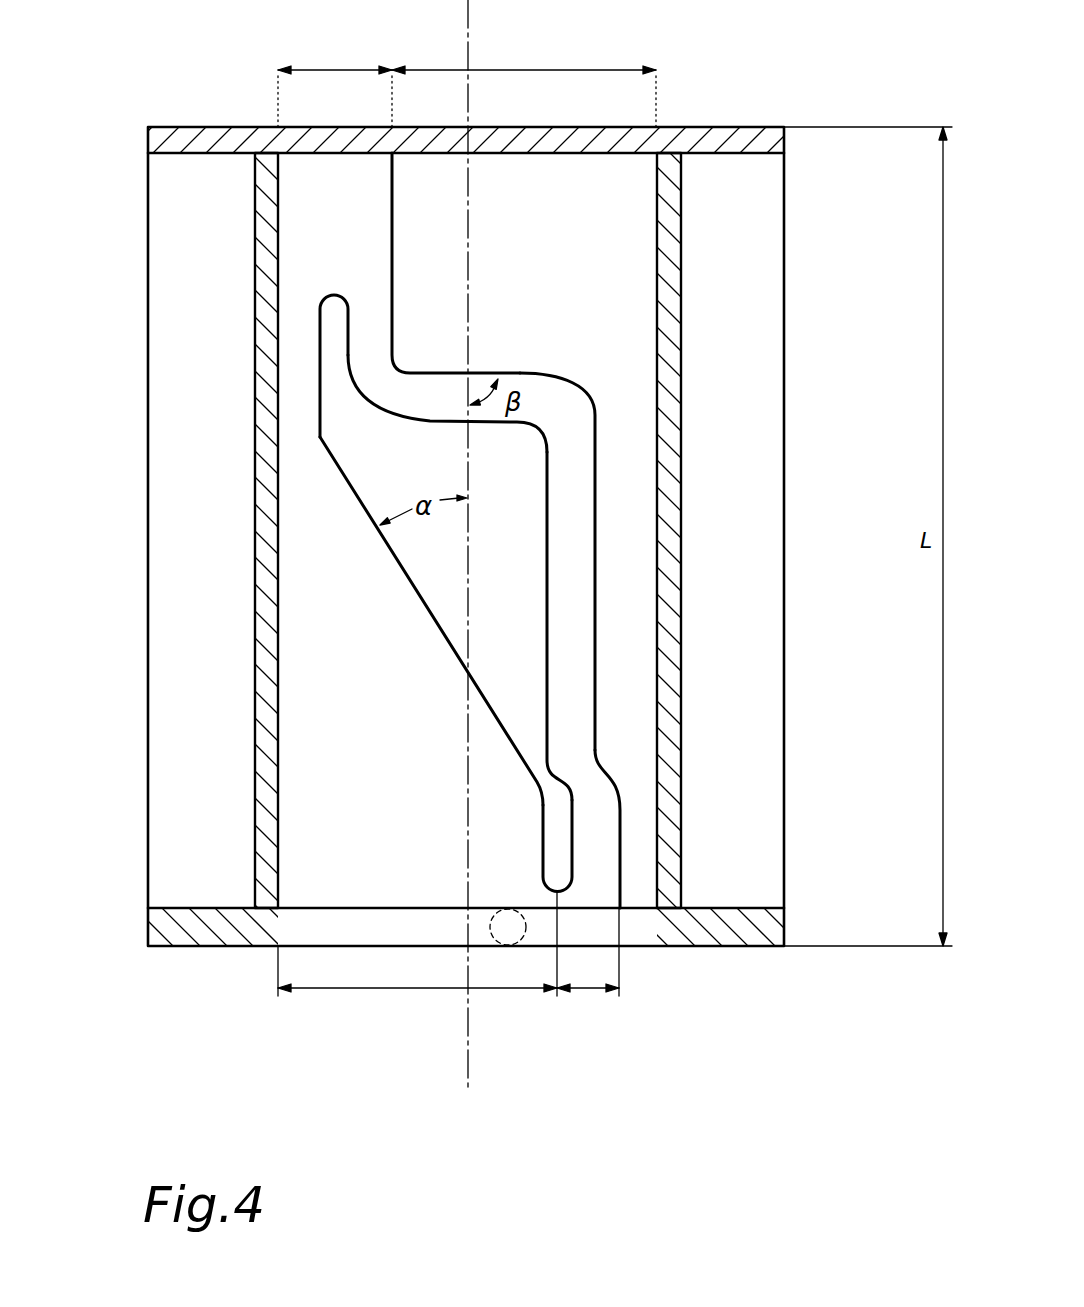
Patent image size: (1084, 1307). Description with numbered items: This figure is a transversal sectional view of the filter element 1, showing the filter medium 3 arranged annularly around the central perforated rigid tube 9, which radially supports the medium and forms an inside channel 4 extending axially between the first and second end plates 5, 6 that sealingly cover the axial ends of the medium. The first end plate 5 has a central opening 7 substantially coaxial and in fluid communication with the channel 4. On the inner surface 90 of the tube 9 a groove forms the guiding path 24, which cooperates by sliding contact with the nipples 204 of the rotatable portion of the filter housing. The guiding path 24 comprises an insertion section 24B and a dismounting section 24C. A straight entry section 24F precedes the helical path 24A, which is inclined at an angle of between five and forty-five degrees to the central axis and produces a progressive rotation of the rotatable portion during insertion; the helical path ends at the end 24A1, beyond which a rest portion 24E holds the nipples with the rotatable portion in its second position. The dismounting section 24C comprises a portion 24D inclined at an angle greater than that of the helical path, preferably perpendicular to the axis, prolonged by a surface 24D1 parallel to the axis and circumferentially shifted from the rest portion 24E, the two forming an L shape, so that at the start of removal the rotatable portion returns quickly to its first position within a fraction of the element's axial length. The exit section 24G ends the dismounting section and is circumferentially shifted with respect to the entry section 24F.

The filter element 1 is at (816, 456).
The filter medium 3 is at (758, 325).
The channel 4 is at (575, 200).
The first end plate 5 is at (755, 932).
The second end plate 6 is at (735, 142).
The central opening 7 is at (353, 921).
The central perforated rigid tube 9 is at (670, 779).
The inner surface 90 is at (646, 313).
The guiding path 24 is at (378, 639).
The helical path 24A is at (412, 587).
The end of the helical path 24A1 is at (317, 327).
The insertion section 24B is at (417, 521).
The dismounting section 24C is at (524, 521).
The portion of the dismounting section 24D is at (443, 377).
The surface 24D1 is at (594, 468).
The rest portion 24E is at (392, 257).
The straight entry section 24F is at (543, 848).
The exit section 24G is at (573, 803).
The nipples 204 is at (512, 912).